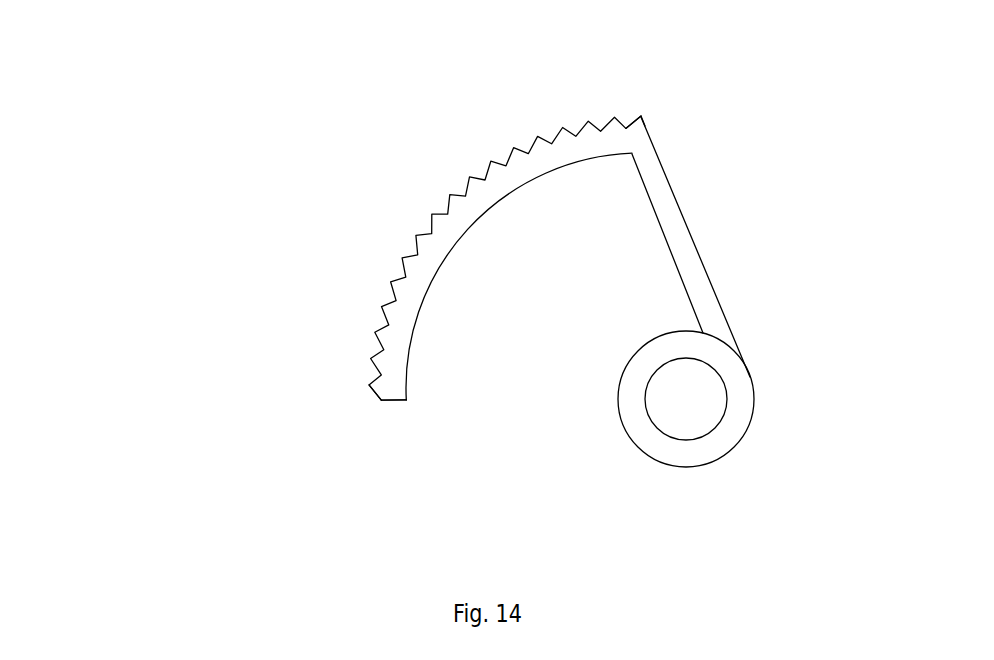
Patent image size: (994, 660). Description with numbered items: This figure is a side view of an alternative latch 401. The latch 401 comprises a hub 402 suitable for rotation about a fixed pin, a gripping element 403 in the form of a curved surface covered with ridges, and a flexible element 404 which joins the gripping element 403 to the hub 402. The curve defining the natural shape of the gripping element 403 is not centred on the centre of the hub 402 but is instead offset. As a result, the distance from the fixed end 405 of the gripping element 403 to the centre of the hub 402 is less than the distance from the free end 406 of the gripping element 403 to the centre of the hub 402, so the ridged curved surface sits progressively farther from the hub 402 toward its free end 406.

The latch 401 is at (232, 60).
The hub 402 is at (681, 482).
The gripping element 403 is at (420, 181).
The flexible element 404 is at (722, 276).
The fixed end 405 is at (637, 117).
The free end 406 is at (383, 400).